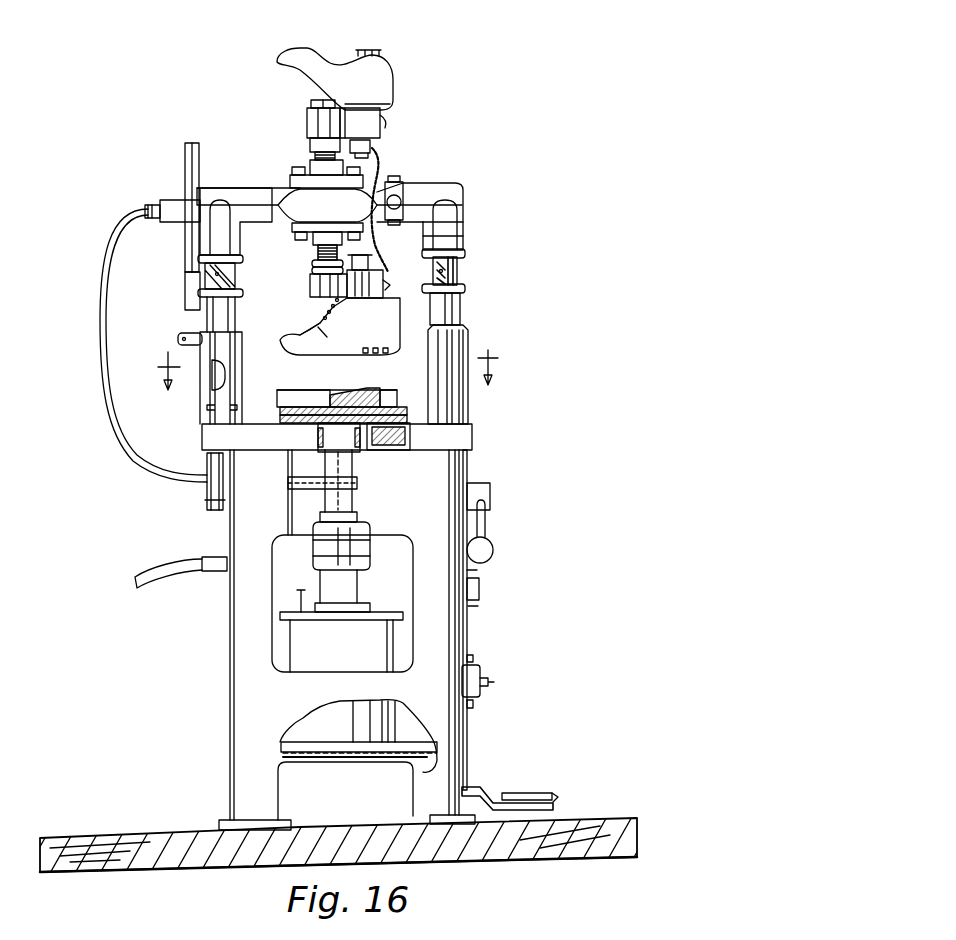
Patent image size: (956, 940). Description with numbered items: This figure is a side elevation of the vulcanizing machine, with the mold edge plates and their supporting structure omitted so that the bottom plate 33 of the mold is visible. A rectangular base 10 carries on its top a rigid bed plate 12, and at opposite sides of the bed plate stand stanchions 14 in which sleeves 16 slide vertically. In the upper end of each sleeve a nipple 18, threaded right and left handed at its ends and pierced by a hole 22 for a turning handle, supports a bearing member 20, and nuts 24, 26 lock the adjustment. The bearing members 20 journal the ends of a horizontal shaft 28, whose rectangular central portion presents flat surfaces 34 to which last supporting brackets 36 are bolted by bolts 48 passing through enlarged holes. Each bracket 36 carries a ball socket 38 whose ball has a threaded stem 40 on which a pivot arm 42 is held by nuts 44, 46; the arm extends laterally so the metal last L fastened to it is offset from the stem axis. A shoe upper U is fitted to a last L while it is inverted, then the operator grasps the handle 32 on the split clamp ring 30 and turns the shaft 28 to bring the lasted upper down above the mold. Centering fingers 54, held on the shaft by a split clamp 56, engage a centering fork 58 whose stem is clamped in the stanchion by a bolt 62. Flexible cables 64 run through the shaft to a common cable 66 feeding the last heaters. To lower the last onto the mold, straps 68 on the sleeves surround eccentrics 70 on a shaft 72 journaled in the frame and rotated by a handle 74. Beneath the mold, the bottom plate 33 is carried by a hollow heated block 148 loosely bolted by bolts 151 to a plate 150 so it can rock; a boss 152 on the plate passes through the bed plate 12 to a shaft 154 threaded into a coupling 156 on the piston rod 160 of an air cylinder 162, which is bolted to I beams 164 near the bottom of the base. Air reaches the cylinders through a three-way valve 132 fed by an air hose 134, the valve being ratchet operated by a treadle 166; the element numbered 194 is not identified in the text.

The base 10 is at (230, 648).
The bed plate 12 is at (205, 438).
The stanchions 14 is at (455, 348).
The sleeves 16 is at (458, 316).
The nipple 18 is at (440, 268).
The bearing member 20 is at (458, 228).
The hole 22 is at (435, 265).
The nut 24 is at (465, 288).
The nut 26 is at (465, 255).
The shaft 28 is at (285, 190).
The split clamp ring 30 is at (400, 195).
The handle 32 is at (405, 200).
The bottom plate 33 is at (282, 392).
The flat surfaces 34 is at (300, 176).
The last supporting bracket 36 is at (312, 240).
The ball socket 38 is at (375, 148).
The threaded stem 40 is at (313, 280).
The pivot arm 42 is at (316, 125).
The nut 44 is at (310, 150).
The nut 46 is at (312, 112).
The bolts 48 is at (462, 185).
The centering fingers 54 is at (186, 255).
The split clamp 56 is at (190, 205).
The centering fork 58 is at (190, 295).
The bolt 62 is at (178, 340).
The flexible cables 64 is at (395, 165).
The common cable 66 is at (100, 335).
The straps 68 is at (470, 458).
The eccentrics 70 is at (480, 483).
The shaft 72 is at (282, 540).
The handle 74 is at (486, 528).
The three-way valve 132 is at (478, 668).
The air hose 134 is at (163, 570).
The block 148 is at (417, 407).
The plate 150 is at (320, 438).
The bolts 151 is at (398, 437).
The boss 152 is at (330, 450).
The shaft 154 is at (365, 518).
The coupling 156 is at (403, 530).
The piston rod 160 is at (348, 577).
The air cylinder 162 is at (308, 48).
The I beams 164 is at (366, 50).
The treadle 166 is at (515, 793).
The bracket 194 is at (480, 592).
The last L is at (385, 80).
The shoe upper U is at (295, 338).